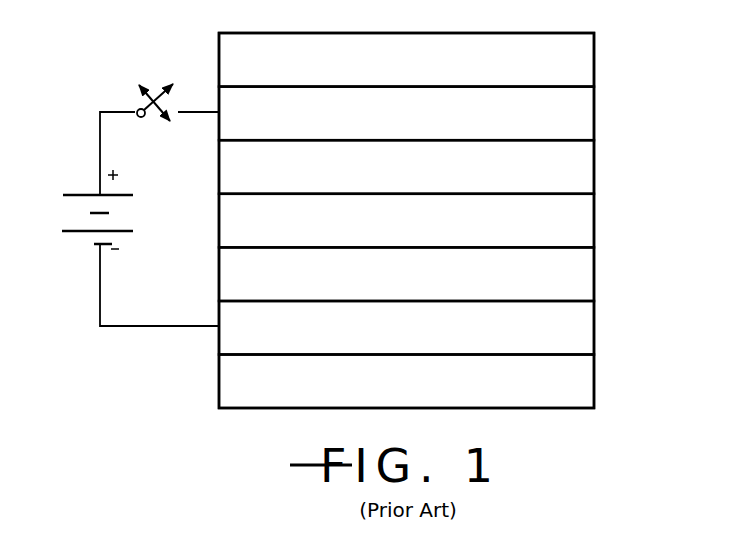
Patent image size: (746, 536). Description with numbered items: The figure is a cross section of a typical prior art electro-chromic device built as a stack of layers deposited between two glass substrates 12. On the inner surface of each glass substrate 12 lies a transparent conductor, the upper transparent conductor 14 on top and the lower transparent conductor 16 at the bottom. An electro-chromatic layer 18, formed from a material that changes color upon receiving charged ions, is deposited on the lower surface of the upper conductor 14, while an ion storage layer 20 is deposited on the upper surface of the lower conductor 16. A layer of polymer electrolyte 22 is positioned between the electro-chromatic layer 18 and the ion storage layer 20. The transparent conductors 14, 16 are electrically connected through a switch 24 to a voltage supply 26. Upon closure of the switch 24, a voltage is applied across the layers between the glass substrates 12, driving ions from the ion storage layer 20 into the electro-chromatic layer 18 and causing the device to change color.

The glass substrate 12 is at (596, 55).
The upper transparent conductor 14 is at (596, 112).
The lower transparent conductor 16 is at (596, 326).
The electro-chromatic layer 18 is at (596, 167).
The ion storage layer 20 is at (596, 277).
The polymer electrolyte layer 22 is at (596, 223).
The switch 24 is at (675, 58).
The voltage supply 26 is at (131, 211).